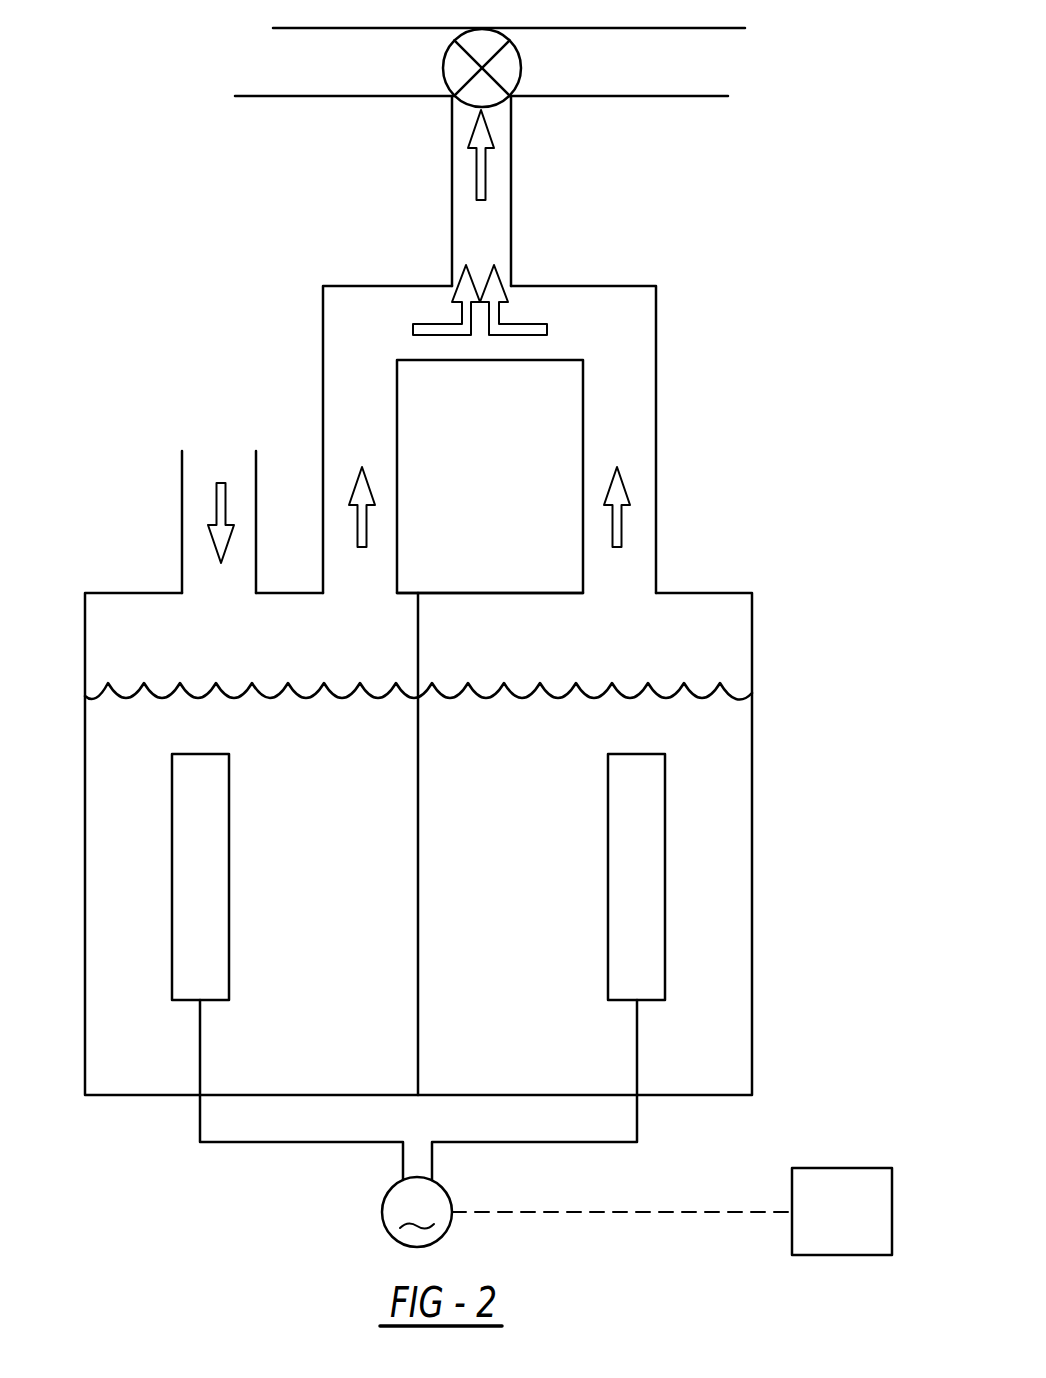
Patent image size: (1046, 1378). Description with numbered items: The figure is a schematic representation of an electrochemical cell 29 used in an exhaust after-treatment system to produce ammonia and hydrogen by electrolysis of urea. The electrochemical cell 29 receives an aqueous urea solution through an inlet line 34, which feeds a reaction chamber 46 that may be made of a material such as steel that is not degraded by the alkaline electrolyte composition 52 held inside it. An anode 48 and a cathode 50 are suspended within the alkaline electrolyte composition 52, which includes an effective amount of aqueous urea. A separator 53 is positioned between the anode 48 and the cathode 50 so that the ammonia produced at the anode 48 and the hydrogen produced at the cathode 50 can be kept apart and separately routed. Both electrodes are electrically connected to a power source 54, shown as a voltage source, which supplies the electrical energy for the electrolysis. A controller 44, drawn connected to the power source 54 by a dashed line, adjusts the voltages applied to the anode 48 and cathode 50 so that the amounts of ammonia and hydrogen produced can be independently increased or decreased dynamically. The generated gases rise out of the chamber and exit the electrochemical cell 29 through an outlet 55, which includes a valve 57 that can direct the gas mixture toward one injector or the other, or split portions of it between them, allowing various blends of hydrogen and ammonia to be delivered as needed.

The electrochemical cell 29 is at (118, 190).
The inlet line 34 is at (182, 505).
The controller 44 is at (824, 1232).
The reaction chamber 46 is at (752, 806).
The anode 48 is at (229, 897).
The cathode 50 is at (665, 848).
The alkaline electrolyte composition 52 is at (302, 955).
The separator 53 is at (418, 805).
The power source 54 is at (382, 1215).
The outlet 55 is at (452, 190).
The valve 57 is at (521, 72).